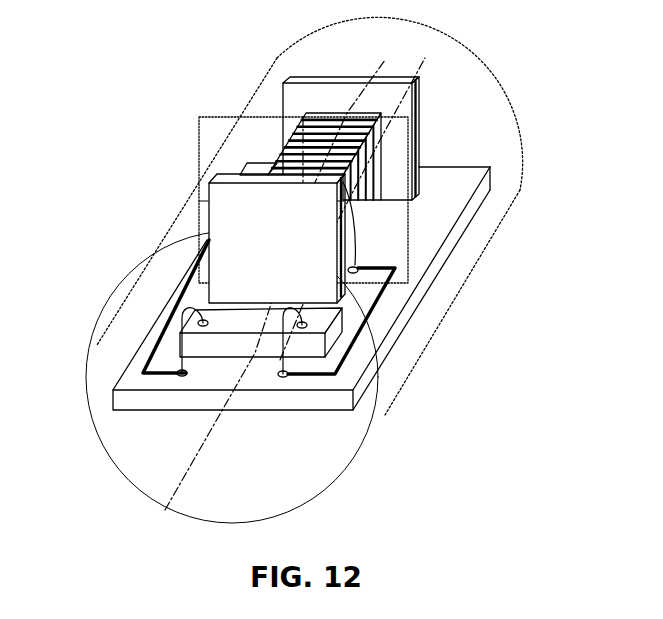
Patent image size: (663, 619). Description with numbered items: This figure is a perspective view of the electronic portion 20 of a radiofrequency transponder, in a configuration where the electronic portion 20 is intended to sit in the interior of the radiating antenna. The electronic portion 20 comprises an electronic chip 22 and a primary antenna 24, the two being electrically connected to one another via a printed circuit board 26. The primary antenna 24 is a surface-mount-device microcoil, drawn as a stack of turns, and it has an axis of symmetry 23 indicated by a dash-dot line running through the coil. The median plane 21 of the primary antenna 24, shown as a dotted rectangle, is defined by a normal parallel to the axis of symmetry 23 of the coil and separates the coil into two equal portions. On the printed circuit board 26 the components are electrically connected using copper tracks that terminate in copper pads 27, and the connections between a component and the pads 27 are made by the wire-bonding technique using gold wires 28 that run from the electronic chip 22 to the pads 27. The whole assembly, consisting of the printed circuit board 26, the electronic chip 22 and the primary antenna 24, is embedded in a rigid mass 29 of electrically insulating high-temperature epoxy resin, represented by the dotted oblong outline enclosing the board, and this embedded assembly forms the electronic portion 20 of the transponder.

The electronic portion 20 is at (150, 162).
The median plane 21 is at (420, 240).
The electronic chip 22 is at (214, 304).
The axis of symmetry 23 is at (372, 96).
The primary antenna 24 is at (375, 143).
The printed circuit board 26 is at (126, 370).
The copper pads 27 is at (214, 380).
The gold wires 28 is at (202, 352).
The rigid mass 29 is at (516, 157).